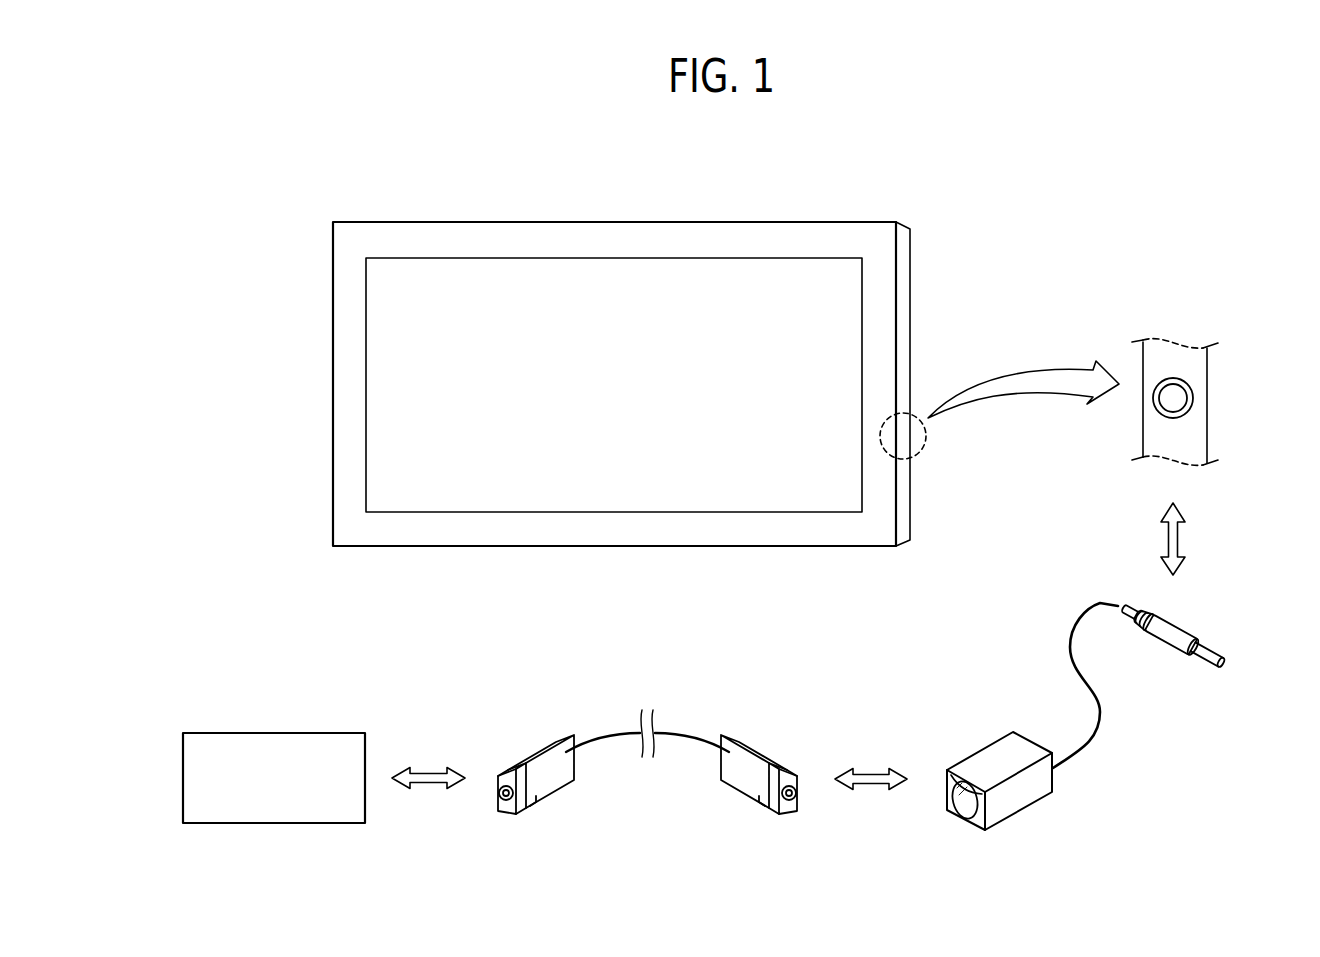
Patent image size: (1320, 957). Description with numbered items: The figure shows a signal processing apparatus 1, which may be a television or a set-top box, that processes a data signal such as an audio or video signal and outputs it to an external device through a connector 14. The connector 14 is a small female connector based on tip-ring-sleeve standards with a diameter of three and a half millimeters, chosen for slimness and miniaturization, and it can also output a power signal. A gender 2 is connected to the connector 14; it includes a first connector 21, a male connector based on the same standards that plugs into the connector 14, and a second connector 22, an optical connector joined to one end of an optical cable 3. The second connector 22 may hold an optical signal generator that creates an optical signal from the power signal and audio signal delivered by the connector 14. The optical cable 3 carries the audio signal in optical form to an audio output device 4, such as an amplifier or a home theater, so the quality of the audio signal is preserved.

The signal processing apparatus 1 is at (613, 222).
The connector 14 is at (1193, 398).
The gender 2 is at (1121, 727).
The first connector 21 is at (1204, 658).
The second connector 22 is at (1020, 803).
The optical cable 3 is at (777, 810).
The audio output device 4 is at (285, 823).